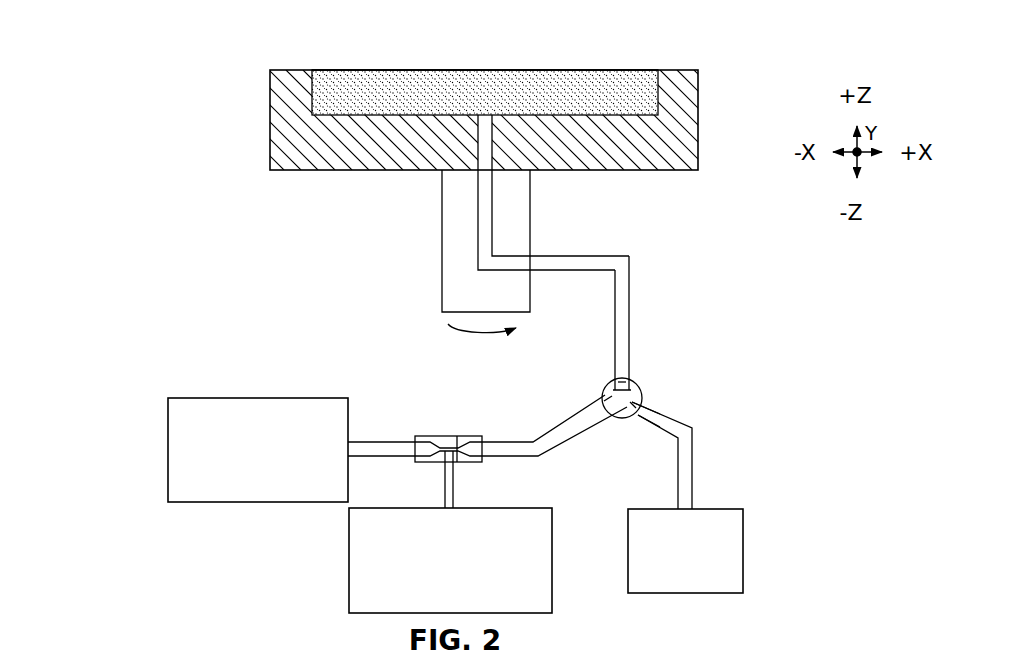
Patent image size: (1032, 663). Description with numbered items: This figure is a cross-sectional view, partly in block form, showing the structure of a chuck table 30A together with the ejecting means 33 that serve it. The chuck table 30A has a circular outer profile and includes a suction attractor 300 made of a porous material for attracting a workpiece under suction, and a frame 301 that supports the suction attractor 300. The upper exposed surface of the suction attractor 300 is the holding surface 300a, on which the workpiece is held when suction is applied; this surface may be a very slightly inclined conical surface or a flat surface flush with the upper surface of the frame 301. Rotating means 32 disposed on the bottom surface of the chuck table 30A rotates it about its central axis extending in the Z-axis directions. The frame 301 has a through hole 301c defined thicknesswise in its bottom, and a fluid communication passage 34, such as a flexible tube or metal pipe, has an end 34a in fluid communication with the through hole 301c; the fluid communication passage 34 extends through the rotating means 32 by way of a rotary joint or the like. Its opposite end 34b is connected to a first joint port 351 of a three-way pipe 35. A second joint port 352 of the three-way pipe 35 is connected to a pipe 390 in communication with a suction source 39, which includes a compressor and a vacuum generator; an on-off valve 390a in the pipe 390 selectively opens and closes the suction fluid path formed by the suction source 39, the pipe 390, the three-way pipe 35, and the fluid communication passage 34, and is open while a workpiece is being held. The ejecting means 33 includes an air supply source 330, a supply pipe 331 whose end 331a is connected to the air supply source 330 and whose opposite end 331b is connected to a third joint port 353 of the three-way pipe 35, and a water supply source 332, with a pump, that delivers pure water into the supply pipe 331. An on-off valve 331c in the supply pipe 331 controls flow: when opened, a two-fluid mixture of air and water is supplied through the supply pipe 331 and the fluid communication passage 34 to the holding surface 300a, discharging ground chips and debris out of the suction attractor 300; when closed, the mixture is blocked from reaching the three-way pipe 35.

The chuck table 30A is at (699, 178).
The frame 301 is at (694, 112).
The through hole 301c is at (487, 122).
The suction attractor 300 is at (352, 77).
The holding surface 300a is at (574, 70).
The rotating means 32 is at (448, 212).
The fluid communication passage 34 is at (650, 292).
The end of fluid communication passage 34a is at (487, 208).
The opposite end of fluid communication passage 34b is at (629, 333).
The three-way pipe 35 is at (648, 388).
The first joint port 351 is at (618, 382).
The second joint port 352 is at (624, 410).
The third joint port 353 is at (606, 403).
The pipe 390 is at (690, 468).
The on-off valve 390a is at (672, 422).
The suction source 39 is at (743, 550).
The ejecting means 33 is at (176, 344).
The air supply source 330 is at (168, 452).
The supply pipe 331 is at (427, 378).
The end of supply pipe 331a is at (392, 440).
The opposite end of supply pipe 331b is at (557, 429).
The on-off valve 331c is at (463, 454).
The water supply source 332 is at (349, 562).